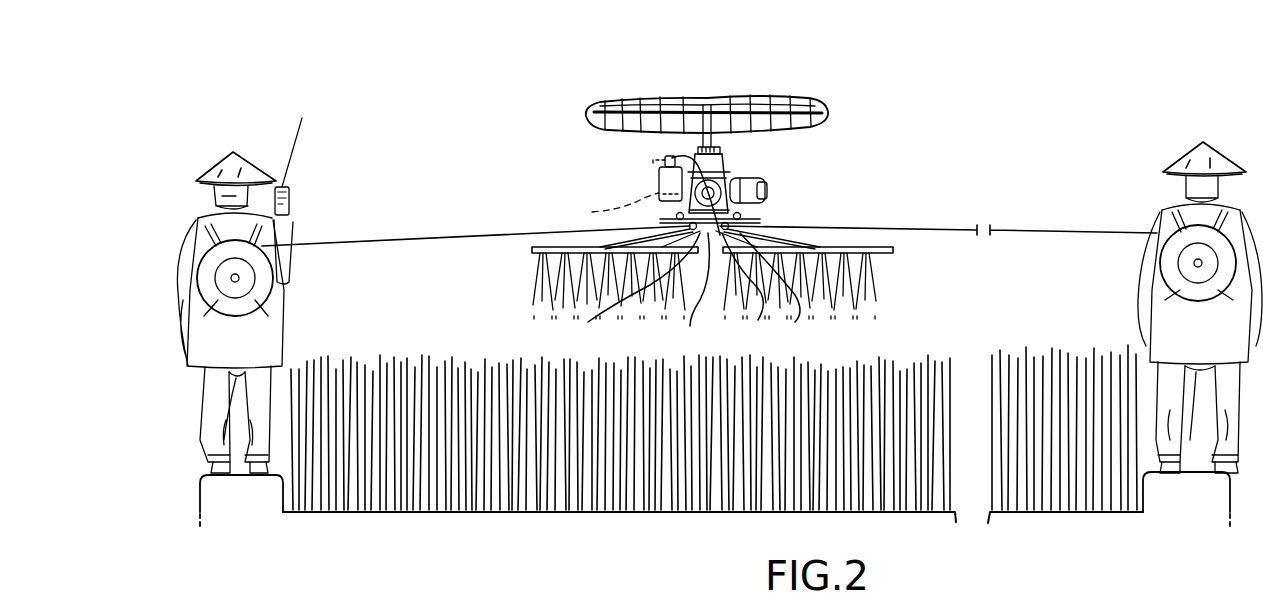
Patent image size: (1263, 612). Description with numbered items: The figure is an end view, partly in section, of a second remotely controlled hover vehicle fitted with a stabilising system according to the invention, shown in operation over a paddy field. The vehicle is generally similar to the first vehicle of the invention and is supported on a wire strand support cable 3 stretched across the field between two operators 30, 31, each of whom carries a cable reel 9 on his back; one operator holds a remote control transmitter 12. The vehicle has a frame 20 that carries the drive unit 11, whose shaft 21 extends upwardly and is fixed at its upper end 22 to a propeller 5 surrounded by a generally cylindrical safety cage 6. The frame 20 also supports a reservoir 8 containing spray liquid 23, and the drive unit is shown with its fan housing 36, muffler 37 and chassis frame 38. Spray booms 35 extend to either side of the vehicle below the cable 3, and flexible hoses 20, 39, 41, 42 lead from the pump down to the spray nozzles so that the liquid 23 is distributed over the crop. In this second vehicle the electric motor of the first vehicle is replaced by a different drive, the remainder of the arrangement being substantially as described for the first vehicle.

The wire strand support cable 3 is at (955, 229).
The propeller 5 is at (785, 108).
The safety cage 6 is at (825, 110).
The reservoir 8 is at (659, 180).
The backpack reel 9 is at (1162, 265).
The engine 11 is at (728, 160).
The radio transmitter 12 is at (292, 194).
The frame 20 is at (627, 292).
The shaft 21 is at (694, 141).
The upper end 22 is at (707, 104).
The spray liquid 23 is at (602, 211).
The first operator 30 is at (203, 224).
The second operator 31 is at (1181, 216).
The spray boom 35 is at (532, 251).
The fan housing 36 is at (730, 200).
The muffler 37 is at (738, 179).
The chassis frame 38 is at (748, 222).
The spray hose 39 is at (777, 292).
The hose 41 is at (662, 156).
The spray hose 42 is at (682, 292).